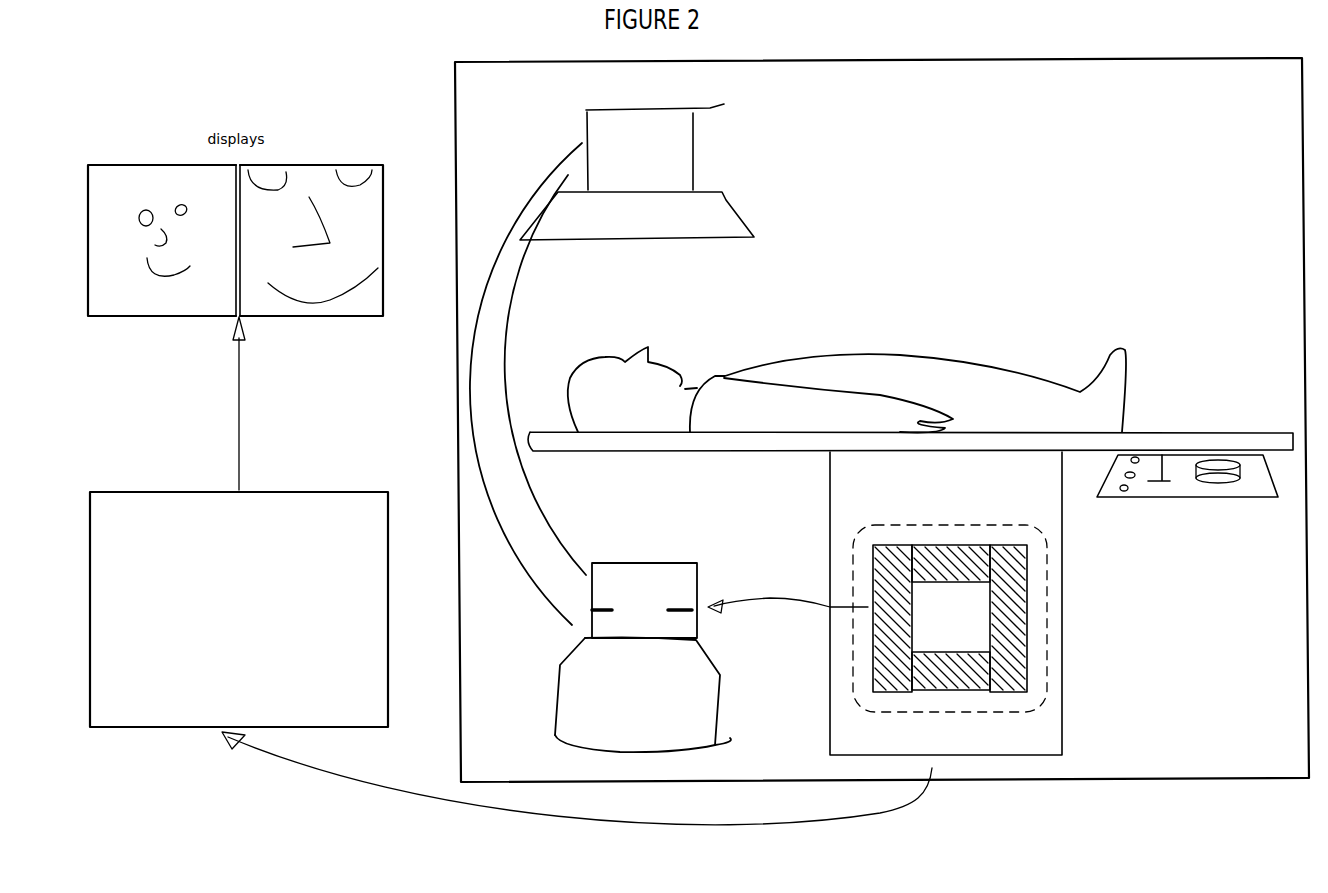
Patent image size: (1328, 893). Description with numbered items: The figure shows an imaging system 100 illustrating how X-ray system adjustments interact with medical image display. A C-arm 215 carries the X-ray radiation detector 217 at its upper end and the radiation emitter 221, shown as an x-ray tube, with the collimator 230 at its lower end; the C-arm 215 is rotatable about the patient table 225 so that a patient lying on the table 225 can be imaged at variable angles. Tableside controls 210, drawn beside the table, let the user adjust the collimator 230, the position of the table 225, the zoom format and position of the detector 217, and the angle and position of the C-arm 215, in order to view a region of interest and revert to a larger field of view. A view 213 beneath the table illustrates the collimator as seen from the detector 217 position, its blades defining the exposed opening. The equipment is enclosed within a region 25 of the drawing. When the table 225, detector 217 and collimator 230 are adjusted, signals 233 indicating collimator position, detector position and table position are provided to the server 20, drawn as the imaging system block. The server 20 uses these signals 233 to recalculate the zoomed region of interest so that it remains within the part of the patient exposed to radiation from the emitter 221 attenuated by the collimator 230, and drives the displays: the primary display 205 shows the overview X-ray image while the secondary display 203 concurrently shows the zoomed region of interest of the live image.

The server (computer system) 20 is at (155, 716).
The imaging room / x-ray system enclosure 25 is at (455, 80).
The imaging system 100 is at (737, 880).
The secondary display 203 is at (368, 309).
The primary display 205 is at (155, 307).
The tableside controls 210 is at (1248, 490).
The view of the collimator 213 is at (1015, 652).
The C-arm 215 is at (508, 351).
The X-ray radiation detector 217 is at (710, 213).
The radiation emitter 221 is at (572, 700).
The patient table 225 is at (728, 455).
The collimator 230 is at (677, 612).
The signals 233 is at (577, 809).